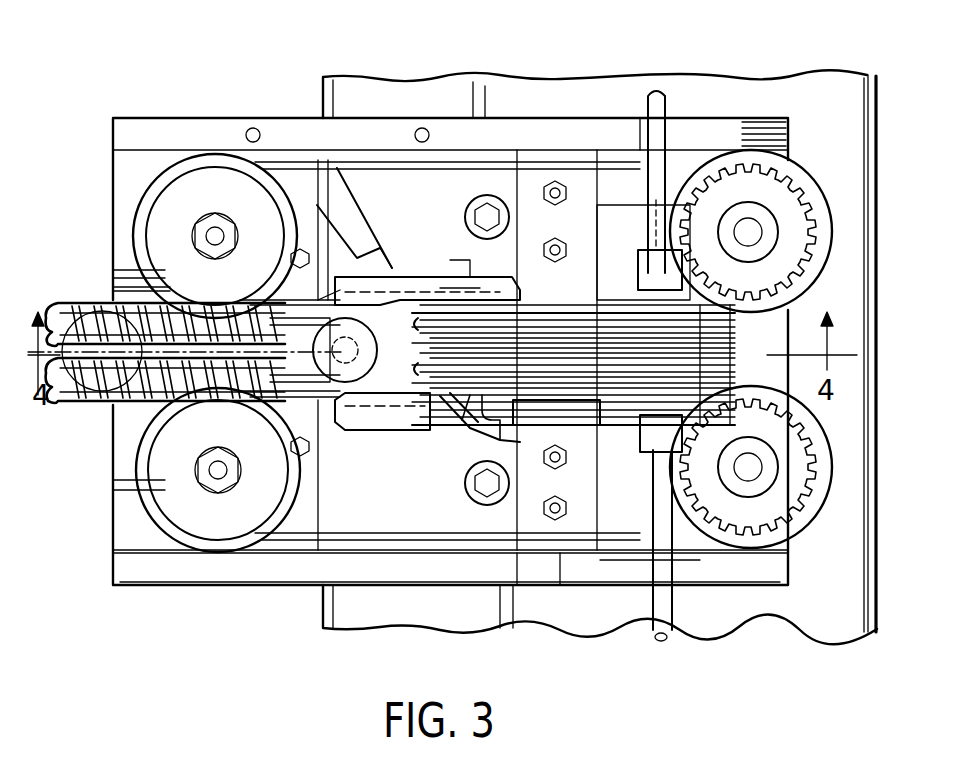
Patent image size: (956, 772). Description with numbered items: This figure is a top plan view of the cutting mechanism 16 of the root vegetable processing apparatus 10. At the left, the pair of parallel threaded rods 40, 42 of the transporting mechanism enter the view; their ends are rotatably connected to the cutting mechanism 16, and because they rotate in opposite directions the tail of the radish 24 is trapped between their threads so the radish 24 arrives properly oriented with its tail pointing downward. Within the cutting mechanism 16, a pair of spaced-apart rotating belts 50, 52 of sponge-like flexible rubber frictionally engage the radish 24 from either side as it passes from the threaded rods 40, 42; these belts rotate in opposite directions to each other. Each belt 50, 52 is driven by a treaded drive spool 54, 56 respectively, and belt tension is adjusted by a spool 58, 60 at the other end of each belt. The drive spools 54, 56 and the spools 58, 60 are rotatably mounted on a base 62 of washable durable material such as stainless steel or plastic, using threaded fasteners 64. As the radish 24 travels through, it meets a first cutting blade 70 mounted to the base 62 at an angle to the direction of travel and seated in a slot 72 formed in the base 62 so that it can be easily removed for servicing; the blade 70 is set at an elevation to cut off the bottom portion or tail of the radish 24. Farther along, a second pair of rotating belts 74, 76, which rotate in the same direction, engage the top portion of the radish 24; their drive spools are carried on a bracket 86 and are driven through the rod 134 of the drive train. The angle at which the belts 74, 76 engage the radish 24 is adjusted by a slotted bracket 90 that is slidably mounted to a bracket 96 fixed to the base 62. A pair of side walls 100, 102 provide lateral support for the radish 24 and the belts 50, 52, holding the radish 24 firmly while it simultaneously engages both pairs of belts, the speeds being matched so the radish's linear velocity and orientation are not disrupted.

The apparatus 10 is at (190, 76).
The cutting mechanism 16 is at (248, 628).
The radish 24 is at (98, 306).
The threaded rod 40 is at (62, 400).
The threaded rod 42 is at (62, 300).
The rotating belt 50 is at (165, 518).
The rotating belt 52 is at (162, 186).
The drive spool 54 is at (787, 500).
The drive spool 56 is at (775, 197).
The spool 58 is at (214, 522).
The spool 60 is at (213, 178).
The base 62 is at (128, 196).
The threaded fasteners 64 is at (220, 232).
The first cutting blade 70 is at (392, 270).
The slot 72 is at (355, 222).
The rotating belt 74 is at (422, 402).
The rotating belt 76 is at (500, 320).
The bracket 86 is at (626, 425).
The bracket 90 is at (470, 438).
The bracket 96 is at (612, 288).
The side wall 100 is at (404, 432).
The side wall 102 is at (430, 292).
The rod 134 is at (652, 92).